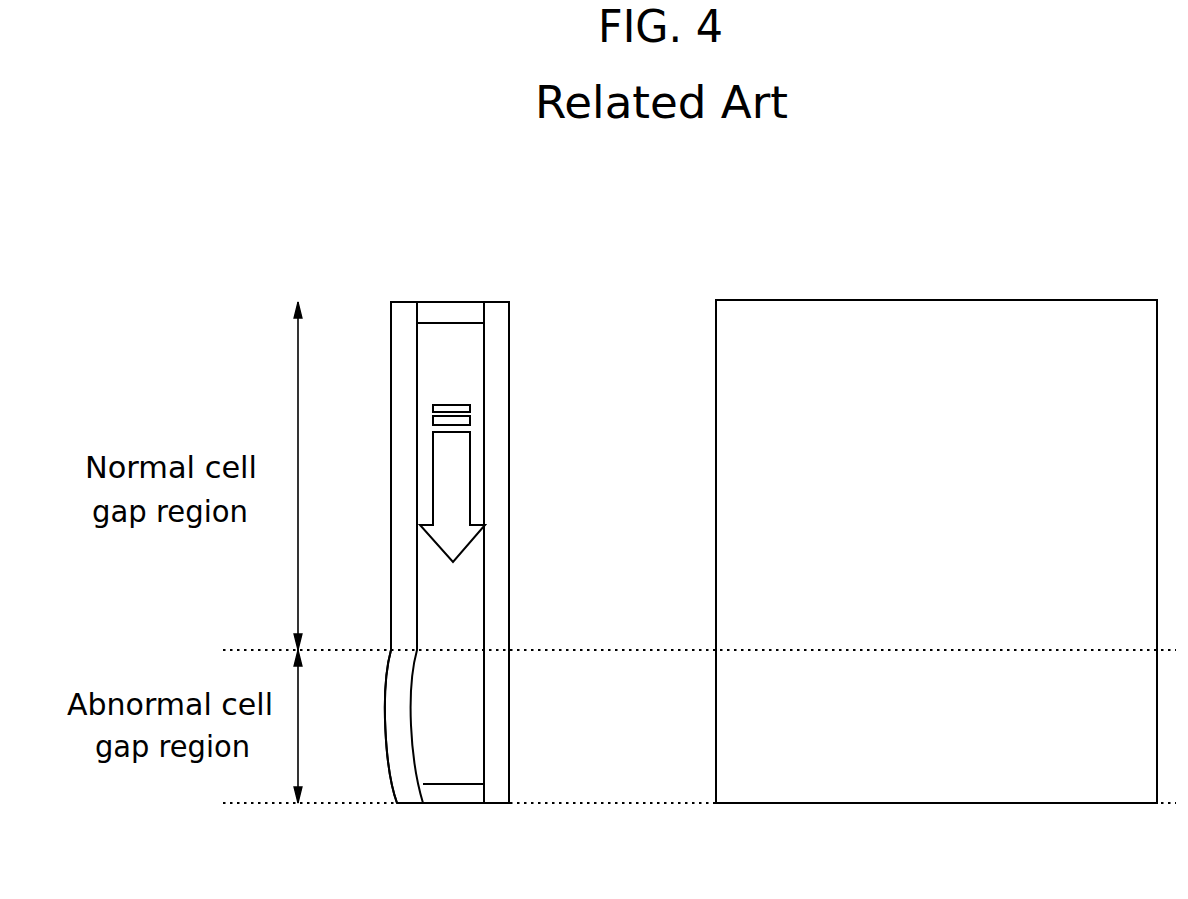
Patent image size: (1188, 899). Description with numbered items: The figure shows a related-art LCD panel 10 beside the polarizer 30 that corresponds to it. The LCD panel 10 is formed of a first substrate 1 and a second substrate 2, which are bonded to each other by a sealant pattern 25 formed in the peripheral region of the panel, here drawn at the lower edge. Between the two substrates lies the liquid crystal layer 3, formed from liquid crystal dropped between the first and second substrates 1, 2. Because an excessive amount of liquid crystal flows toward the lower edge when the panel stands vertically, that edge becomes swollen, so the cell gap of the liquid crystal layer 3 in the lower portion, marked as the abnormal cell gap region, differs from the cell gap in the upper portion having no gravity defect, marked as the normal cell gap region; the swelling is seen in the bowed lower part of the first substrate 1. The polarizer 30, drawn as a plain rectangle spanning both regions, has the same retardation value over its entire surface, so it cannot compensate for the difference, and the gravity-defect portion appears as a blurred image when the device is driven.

The first substrate 1 is at (403, 317).
The second substrate 2 is at (497, 317).
The liquid crystal layer 3 is at (472, 377).
The LCD panel 10 is at (550, 309).
The sealant pattern 25 is at (456, 797).
The polarizer 30 is at (933, 310).